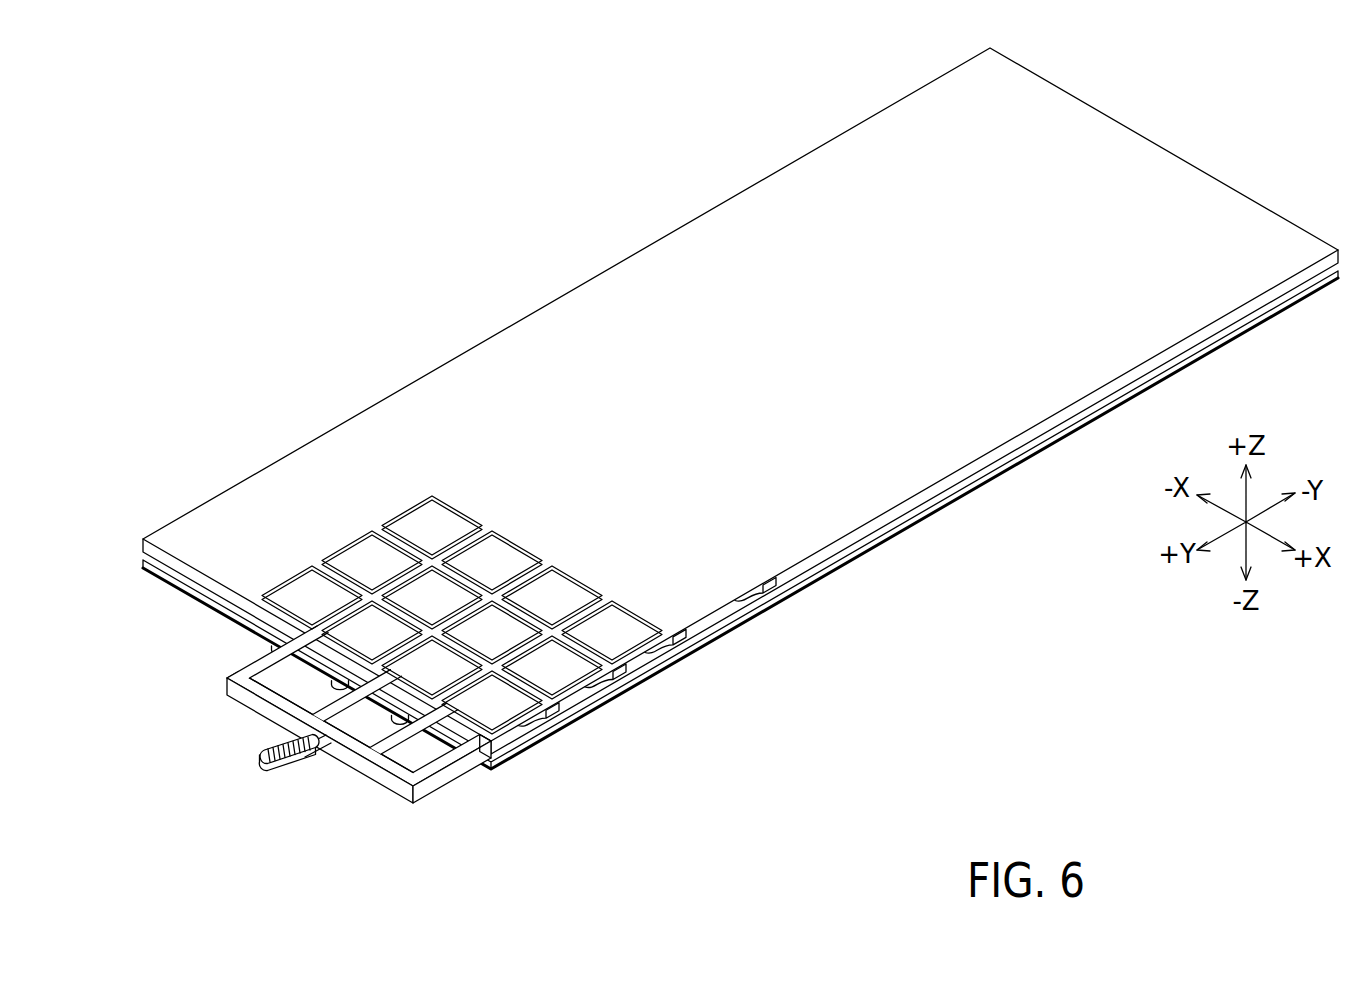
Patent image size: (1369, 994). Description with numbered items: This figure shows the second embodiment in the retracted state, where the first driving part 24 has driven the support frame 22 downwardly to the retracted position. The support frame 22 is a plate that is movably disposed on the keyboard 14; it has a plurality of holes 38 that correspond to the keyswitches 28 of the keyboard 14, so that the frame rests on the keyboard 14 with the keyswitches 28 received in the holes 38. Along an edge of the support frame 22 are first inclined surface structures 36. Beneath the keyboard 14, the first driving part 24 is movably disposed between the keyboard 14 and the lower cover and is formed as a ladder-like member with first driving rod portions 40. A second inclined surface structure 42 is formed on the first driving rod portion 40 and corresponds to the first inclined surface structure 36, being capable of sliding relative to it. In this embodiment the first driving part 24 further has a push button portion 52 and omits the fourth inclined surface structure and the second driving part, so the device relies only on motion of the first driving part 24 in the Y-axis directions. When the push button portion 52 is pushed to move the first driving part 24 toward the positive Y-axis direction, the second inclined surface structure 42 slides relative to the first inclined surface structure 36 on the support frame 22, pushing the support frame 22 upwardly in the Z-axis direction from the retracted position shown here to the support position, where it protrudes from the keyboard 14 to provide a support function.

The keyboard 14 is at (955, 505).
The support frame 22 is at (640, 247).
The first driving part 24 is at (337, 778).
The keyswitch 28 is at (312, 590).
The first inclined surface structure 36 is at (570, 702).
The hole 38 is at (457, 505).
The first driving rod portion 40 is at (455, 776).
The second inclined surface structure 42 is at (612, 691).
The push button portion 52 is at (252, 760).